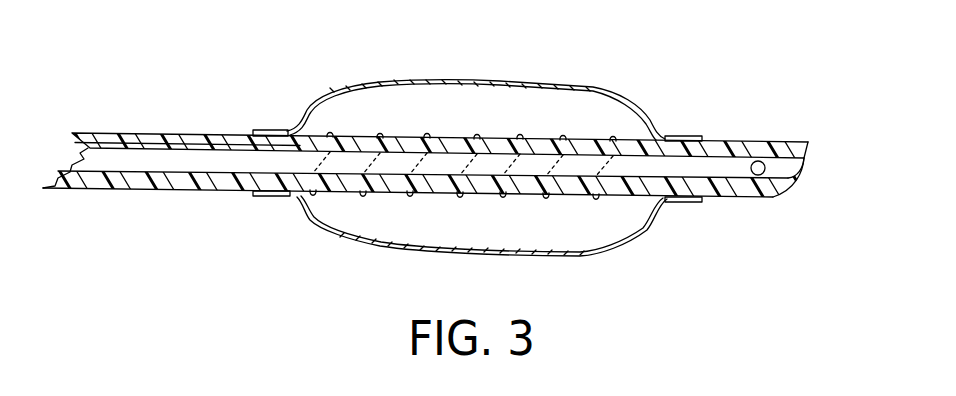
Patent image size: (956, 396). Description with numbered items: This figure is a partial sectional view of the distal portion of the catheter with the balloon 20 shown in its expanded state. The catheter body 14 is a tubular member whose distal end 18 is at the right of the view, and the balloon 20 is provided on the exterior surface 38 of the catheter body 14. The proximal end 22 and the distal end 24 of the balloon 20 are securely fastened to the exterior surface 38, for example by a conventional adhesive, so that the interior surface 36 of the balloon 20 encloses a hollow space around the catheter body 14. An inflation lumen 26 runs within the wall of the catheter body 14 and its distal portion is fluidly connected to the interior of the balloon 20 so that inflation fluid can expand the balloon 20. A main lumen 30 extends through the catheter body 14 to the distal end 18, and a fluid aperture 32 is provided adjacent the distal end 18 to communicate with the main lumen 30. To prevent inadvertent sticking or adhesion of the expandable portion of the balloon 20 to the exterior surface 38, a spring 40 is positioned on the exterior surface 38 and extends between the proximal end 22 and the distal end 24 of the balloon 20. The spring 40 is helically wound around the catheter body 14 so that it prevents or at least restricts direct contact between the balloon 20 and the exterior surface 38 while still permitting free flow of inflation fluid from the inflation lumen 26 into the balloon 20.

The catheter body 14 is at (132, 191).
The distal end 18 is at (787, 143).
The balloon 20 is at (361, 81).
The proximal end of the balloon 22 is at (267, 130).
The distal end of the balloon 24 is at (680, 138).
The inflation lumen 26 is at (162, 137).
The main lumen 30 is at (248, 156).
The fluid apertures 32 is at (806, 168).
The interior surface of the balloon 36 is at (597, 90).
The exterior surface of the catheter body 38 is at (497, 140).
The spring 40 is at (427, 137).